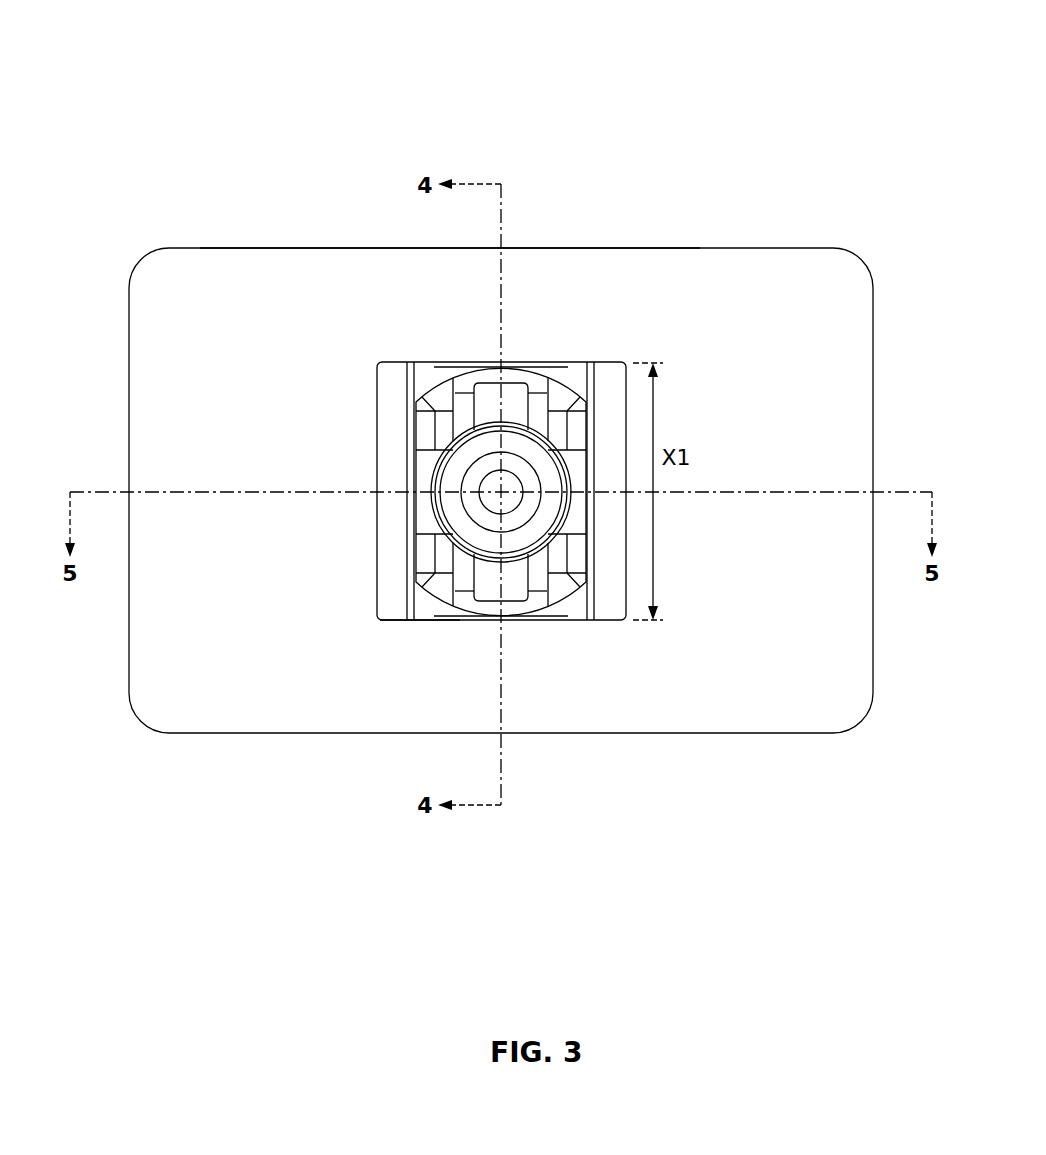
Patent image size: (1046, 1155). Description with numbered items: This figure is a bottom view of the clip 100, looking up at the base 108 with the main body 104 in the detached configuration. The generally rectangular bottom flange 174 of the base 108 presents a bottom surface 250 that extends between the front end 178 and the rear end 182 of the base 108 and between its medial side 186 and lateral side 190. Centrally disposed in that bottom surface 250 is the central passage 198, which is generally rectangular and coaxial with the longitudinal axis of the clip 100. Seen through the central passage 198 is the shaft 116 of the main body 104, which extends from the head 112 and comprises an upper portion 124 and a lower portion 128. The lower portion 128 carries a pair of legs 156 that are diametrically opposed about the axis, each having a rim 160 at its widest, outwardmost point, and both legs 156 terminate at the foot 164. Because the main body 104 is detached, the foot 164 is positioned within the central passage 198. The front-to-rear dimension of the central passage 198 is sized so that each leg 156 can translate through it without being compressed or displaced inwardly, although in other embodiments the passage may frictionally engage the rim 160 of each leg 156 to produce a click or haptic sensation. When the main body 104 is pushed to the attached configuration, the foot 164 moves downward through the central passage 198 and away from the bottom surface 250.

The clip 100 is at (175, 78).
The main body 104 is at (385, 398).
The base 108 is at (775, 262).
The head 112 is at (390, 512).
The shaft 116 is at (455, 440).
The upper portion 124 is at (440, 552).
The lower portion 128 is at (545, 534).
The legs 156 is at (455, 403).
The rim 160 is at (487, 388).
The foot 164 is at (480, 490).
The bottom flange 174 is at (195, 300).
The front end 178 is at (360, 250).
The rear end 182 is at (665, 735).
The medial side 186 is at (130, 636).
The lateral side 190 is at (878, 332).
The central passage 198 is at (380, 618).
The bottom surface 250 is at (270, 258).